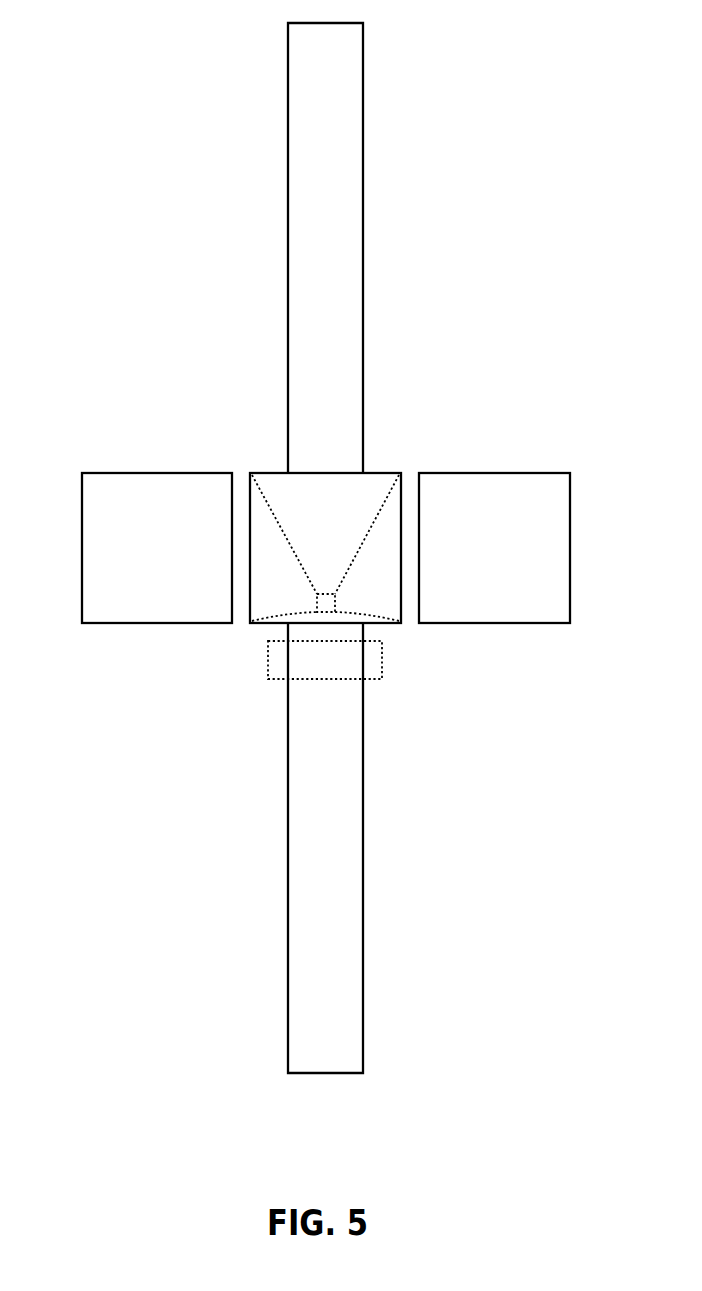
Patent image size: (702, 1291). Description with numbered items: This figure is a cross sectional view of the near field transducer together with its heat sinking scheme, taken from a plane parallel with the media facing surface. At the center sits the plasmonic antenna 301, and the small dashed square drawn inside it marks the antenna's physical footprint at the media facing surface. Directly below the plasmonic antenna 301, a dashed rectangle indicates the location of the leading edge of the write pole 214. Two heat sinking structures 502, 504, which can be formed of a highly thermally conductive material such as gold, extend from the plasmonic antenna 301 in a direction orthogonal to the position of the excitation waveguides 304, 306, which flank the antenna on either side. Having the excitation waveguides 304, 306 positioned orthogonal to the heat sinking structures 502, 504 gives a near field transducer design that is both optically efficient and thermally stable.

The heat sinking structure 502 is at (333, 201).
The heat sinking structure 504 is at (363, 849).
The plasmonic antenna 301 is at (377, 473).
The excitation waveguide 306 is at (120, 473).
The excitation waveguide 304 is at (478, 473).
The write pole 214 is at (382, 660).